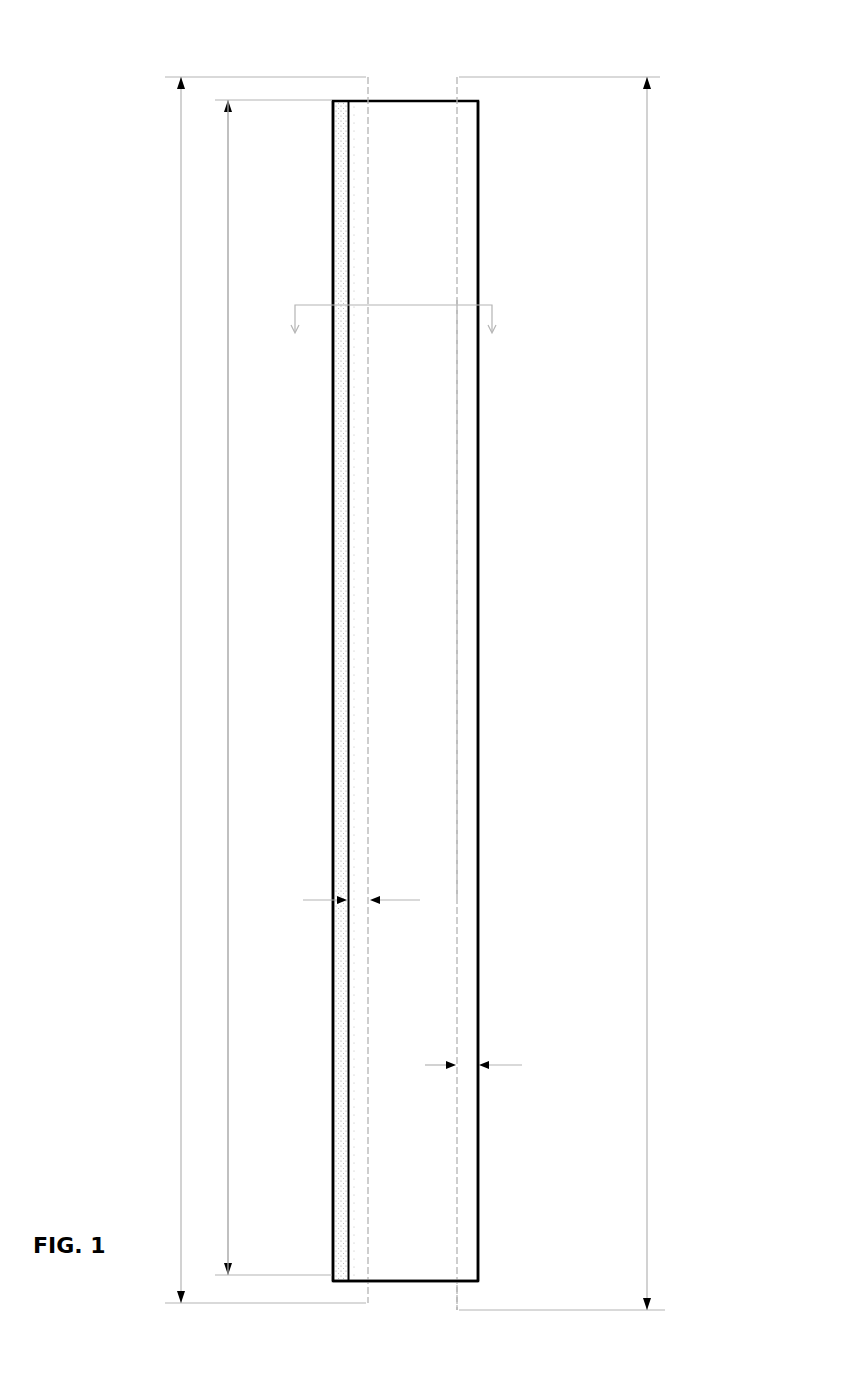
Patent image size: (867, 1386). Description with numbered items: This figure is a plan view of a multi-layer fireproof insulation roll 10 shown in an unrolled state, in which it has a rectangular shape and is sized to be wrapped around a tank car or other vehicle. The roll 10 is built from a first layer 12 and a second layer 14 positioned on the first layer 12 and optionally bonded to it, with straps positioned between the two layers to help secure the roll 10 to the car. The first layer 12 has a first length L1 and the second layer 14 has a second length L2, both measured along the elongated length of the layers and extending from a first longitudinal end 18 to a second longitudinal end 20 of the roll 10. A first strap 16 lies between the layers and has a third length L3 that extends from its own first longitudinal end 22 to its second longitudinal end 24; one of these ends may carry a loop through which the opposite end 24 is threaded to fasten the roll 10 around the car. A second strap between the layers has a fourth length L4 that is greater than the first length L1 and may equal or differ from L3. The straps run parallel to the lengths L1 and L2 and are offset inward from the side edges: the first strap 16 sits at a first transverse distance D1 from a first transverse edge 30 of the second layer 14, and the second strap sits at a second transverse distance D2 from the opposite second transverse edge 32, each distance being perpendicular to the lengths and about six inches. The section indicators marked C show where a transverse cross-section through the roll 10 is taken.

The multi-layer fireproof insulation roll 10 is at (511, 54).
The first layer 12 is at (331, 543).
The second layer 14 is at (466, 585).
The first strap 16 is at (459, 711).
The first longitudinal end 18 is at (397, 1283).
The second longitudinal end 20 is at (392, 99).
The first longitudinal end 22 is at (456, 1305).
The second longitudinal end 24 is at (456, 77).
The first transverse edge 30 is at (480, 458).
The second transverse edge 32 is at (346, 461).
The first length L1 is at (230, 733).
The second length L2 is at (269, 687).
The third length L3 is at (648, 726).
The fourth length L4 is at (181, 708).
The first transverse distance D1 is at (499, 1062).
The second transverse distance D2 is at (390, 897).
The section C- C is at (391, 333).